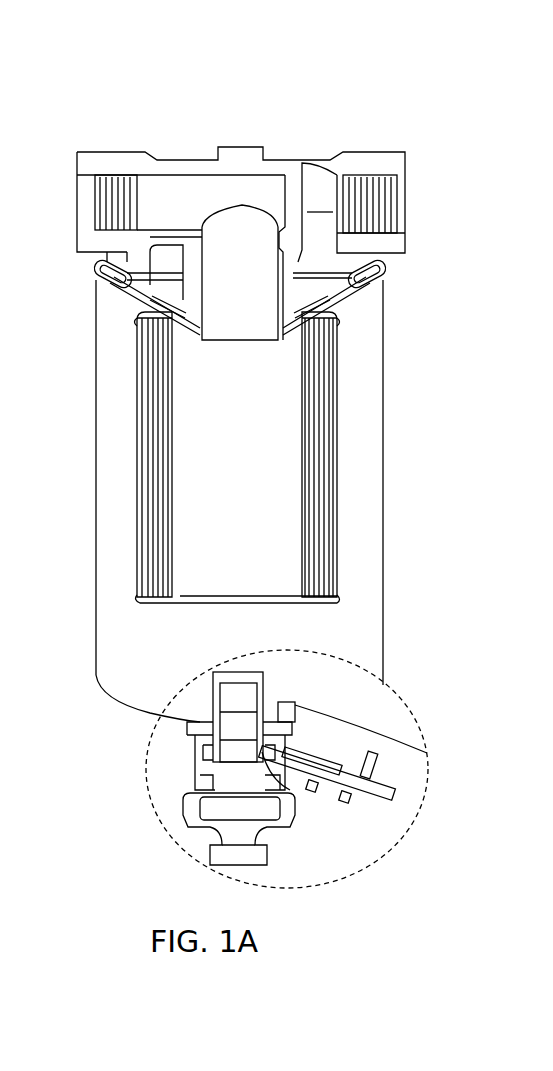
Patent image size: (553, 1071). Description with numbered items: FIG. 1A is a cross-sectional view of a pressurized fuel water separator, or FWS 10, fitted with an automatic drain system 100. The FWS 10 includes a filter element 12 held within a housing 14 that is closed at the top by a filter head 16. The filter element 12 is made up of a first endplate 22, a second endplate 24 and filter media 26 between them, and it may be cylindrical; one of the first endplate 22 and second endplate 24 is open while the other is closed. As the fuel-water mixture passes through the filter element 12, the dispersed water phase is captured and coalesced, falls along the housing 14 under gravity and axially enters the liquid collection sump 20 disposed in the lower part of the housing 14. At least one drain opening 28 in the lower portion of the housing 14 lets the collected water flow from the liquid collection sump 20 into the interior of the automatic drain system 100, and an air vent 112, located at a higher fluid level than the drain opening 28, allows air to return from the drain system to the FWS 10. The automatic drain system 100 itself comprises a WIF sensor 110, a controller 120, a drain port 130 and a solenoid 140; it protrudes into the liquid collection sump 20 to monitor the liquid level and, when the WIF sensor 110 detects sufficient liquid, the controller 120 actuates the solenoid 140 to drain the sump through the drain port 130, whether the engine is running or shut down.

The fuel water separator 10 is at (100, 130).
The filter element 12 is at (125, 410).
The housing 14 is at (383, 395).
The filter head 16 is at (400, 215).
The liquid collection sump 20 is at (383, 647).
The first endplate 22 is at (335, 598).
The second endplate 24 is at (333, 320).
The filter media 26 is at (320, 513).
The drain opening 28 is at (203, 720).
The automatic drain system 100 is at (135, 757).
The WIF sensor 110 is at (300, 712).
The air vent 112 is at (300, 733).
The controller 120 is at (318, 826).
The drain port 130 is at (395, 798).
The solenoid 140 is at (190, 762).